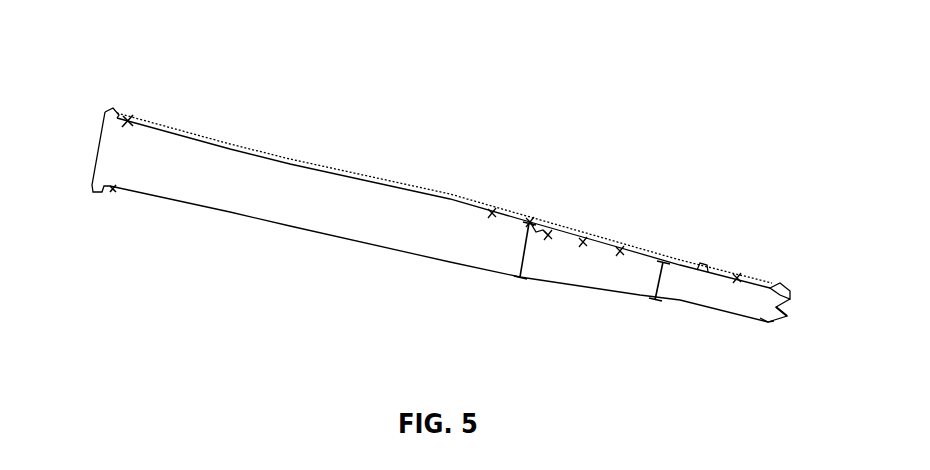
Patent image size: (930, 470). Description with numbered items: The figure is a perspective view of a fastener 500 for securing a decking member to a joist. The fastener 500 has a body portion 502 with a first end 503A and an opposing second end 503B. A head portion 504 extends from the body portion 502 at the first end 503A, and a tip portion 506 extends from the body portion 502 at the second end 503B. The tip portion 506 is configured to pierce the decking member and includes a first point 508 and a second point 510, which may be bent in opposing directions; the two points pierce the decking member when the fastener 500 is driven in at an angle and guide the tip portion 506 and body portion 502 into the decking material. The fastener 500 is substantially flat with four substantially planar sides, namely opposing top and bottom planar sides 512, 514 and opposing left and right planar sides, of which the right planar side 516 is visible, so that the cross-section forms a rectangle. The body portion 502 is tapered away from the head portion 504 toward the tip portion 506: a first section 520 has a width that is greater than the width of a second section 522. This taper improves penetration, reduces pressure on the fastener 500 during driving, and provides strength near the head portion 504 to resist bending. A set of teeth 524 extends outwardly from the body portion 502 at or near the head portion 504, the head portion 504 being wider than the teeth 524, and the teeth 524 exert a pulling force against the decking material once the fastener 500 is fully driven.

The fastener 500 is at (623, 101).
The body portion 502 is at (368, 169).
The first end 503A is at (97, 158).
The second end 503B is at (773, 287).
The head portion 504 is at (113, 111).
The tip portion 506 is at (771, 324).
The first point 508 is at (789, 290).
The second point 510 is at (783, 318).
The top planar side 512 is at (277, 157).
The bottom planar side 514 is at (277, 222).
The right planar side 516 is at (343, 215).
The first section 520 is at (507, 212).
The second section 522 is at (613, 253).
The set of teeth 524 is at (131, 121).